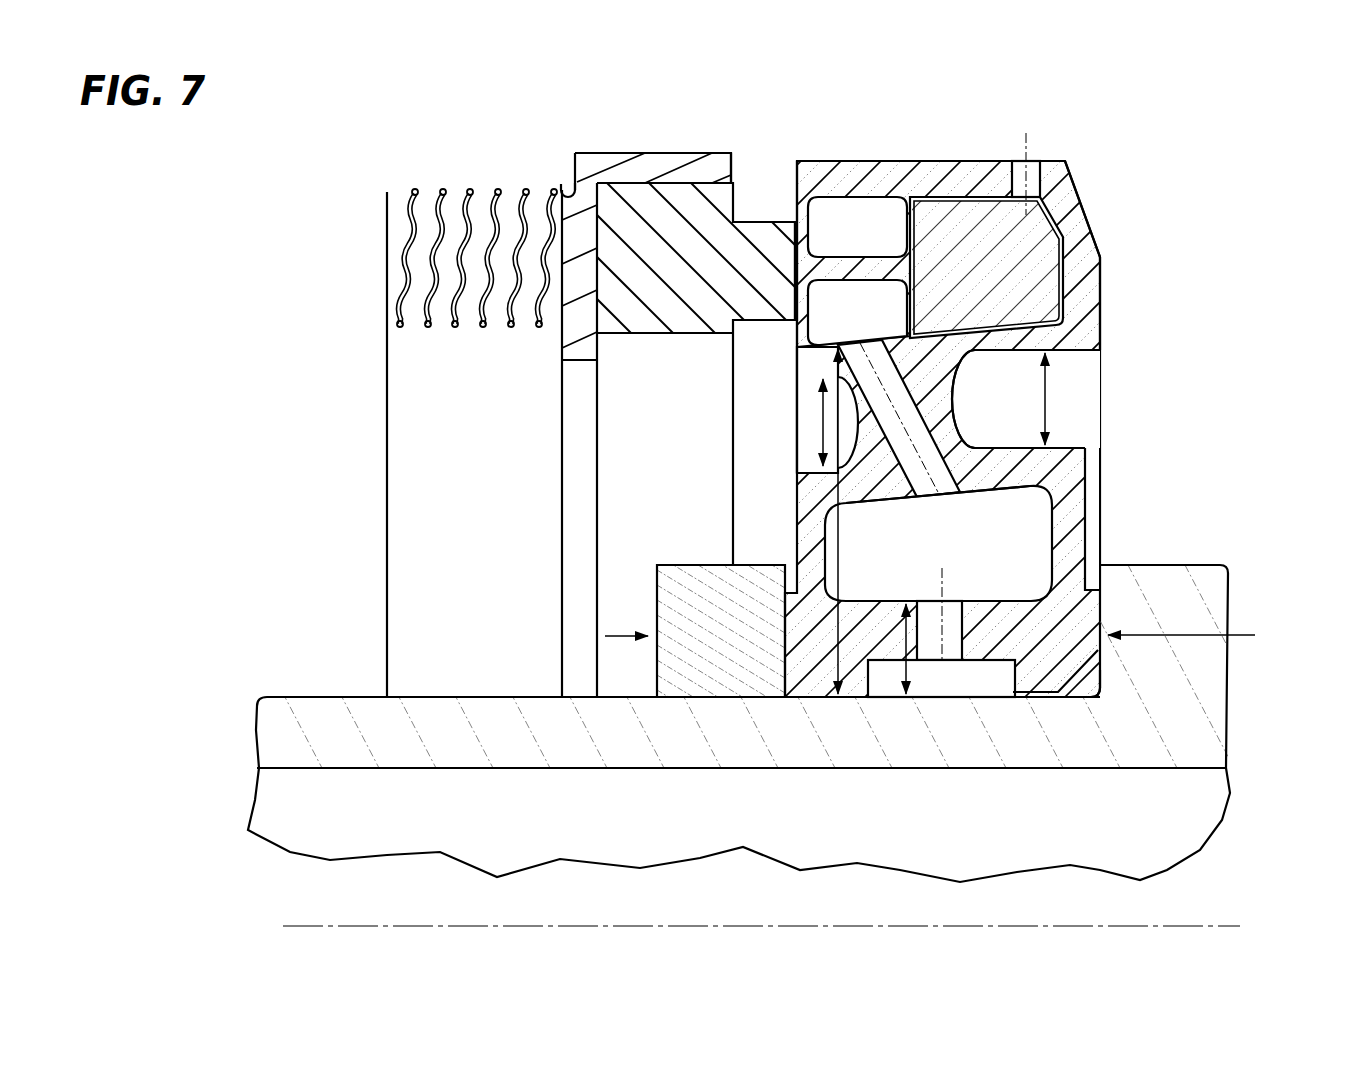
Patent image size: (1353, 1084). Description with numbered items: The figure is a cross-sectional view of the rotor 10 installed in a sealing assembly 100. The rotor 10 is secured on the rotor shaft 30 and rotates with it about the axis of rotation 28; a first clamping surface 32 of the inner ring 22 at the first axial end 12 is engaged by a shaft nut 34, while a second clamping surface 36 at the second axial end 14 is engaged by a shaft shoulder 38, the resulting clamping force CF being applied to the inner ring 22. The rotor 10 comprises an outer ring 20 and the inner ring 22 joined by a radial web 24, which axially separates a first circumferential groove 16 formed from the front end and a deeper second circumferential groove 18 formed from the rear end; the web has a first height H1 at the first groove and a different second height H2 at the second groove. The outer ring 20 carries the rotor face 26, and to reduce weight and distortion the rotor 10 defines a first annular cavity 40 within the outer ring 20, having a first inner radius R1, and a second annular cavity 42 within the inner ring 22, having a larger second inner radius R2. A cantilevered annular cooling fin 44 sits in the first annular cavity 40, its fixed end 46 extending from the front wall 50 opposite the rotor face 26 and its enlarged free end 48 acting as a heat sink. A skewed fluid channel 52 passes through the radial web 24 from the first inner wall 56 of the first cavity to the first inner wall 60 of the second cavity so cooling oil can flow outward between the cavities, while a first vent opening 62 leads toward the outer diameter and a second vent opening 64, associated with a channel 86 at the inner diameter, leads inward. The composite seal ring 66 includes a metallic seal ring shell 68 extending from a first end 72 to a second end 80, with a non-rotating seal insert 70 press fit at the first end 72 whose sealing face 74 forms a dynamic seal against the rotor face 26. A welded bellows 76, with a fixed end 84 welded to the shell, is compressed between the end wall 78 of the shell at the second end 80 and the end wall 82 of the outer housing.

The rotor 10 is at (984, 156).
The sealing assembly 100 is at (875, 157).
The first axial end 12 is at (795, 440).
The second axial end 14 is at (1105, 318).
The first circumferential groove 16 is at (795, 413).
The second circumferential groove 18 is at (1070, 373).
The outer ring 20 is at (1108, 253).
The inner ring 22 is at (1090, 537).
The radial web 24 is at (958, 408).
The rotor face 26 is at (795, 205).
The axis of rotation 28 is at (1207, 927).
The rotor shaft 30 is at (315, 694).
The first clamping surface 32 is at (785, 617).
The shaft nut 34 is at (682, 565).
The second clamping surface 36 is at (1097, 617).
The shaft shoulder 38 is at (1183, 593).
The first annular cavity 40 is at (877, 210).
The second annular cavity 42 is at (1013, 523).
The annular cooling fin 44 is at (1025, 228).
The fixed end 46 is at (858, 290).
The enlarged free end 48 is at (940, 220).
The front wall 50 is at (800, 240).
The fluid channel 52 is at (903, 407).
The first inner wall 56 is at (890, 340).
The first inner wall 60 is at (890, 503).
The first vent opening 62 is at (1032, 180).
The second vent opening 64 is at (945, 633).
The composite seal ring 66 is at (733, 147).
The seal ring shell 68 is at (638, 150).
The seal insert 70 is at (687, 230).
The first end 72 is at (738, 171).
The sealing face 74 is at (795, 262).
The welded bellows 76 is at (460, 189).
The end wall 78 is at (560, 333).
The second end 80 is at (557, 187).
The end wall 82 is at (382, 372).
The fixed end 84 is at (553, 193).
The channel 86 is at (999, 678).
The first height H1 is at (820, 440).
The second height H2 is at (1047, 400).
The first inner radius R1 is at (785, 650).
The second inner radius R2 is at (900, 665).
The clamping force CF is at (951, 649).